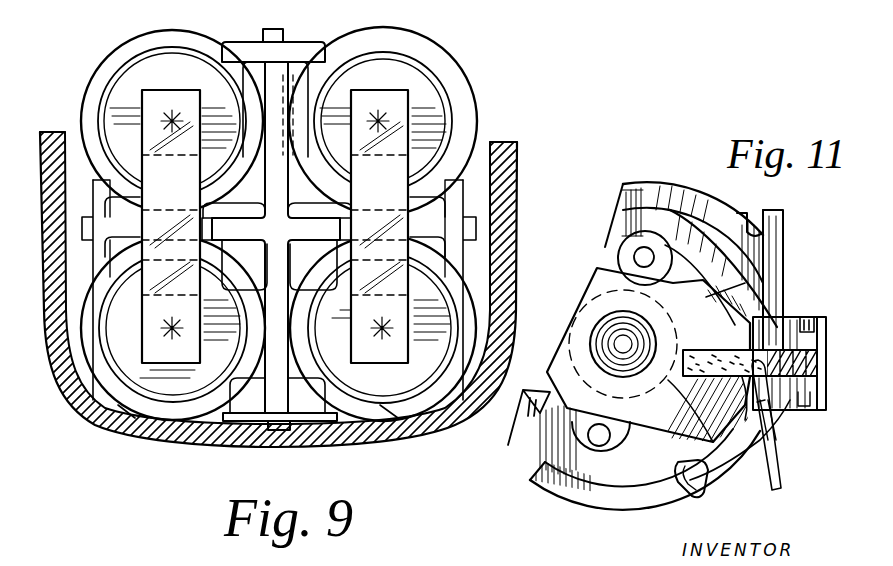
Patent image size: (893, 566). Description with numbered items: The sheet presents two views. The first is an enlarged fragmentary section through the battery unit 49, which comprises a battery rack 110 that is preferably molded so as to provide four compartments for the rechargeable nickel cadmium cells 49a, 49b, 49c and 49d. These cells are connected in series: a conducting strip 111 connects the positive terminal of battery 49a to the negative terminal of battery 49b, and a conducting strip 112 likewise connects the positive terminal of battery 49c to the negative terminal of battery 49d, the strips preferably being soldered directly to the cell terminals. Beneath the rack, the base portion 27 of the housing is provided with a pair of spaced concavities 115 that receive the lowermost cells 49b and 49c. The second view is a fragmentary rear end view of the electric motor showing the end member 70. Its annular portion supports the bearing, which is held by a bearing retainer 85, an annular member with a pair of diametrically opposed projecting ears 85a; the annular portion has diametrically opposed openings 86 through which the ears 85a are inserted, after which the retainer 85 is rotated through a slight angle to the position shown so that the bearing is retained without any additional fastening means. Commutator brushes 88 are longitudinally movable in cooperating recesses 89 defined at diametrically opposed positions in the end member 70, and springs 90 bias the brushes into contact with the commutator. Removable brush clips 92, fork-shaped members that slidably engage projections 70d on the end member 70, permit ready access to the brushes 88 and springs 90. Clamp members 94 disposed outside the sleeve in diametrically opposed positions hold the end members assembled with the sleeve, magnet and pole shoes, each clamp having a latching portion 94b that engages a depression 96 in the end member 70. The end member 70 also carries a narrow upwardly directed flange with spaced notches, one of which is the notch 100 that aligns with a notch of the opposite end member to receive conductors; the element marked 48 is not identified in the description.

In FIG. 9, the base portion 27 is at (162, 422).
In FIG. 9, the battery unit 49 is at (470, 96).
In FIG. 9, the rechargeable nickel cadmium cell 49a is at (432, 58).
In FIG. 9, the rechargeable nickel cadmium cell 49b is at (418, 403).
In FIG. 9, the rechargeable nickel cadmium cell 49c is at (118, 394).
In FIG. 9, the rechargeable nickel cadmium cell 49d is at (98, 72).
In FIG. 9, the battery rack 110 is at (267, 403).
In FIG. 9, the conducting strip 111 is at (396, 173).
In FIG. 9, the conducting strip 112 is at (170, 197).
In FIG. 9, the concavities 115 is at (382, 418).
In FIG. 11, the bearing retainer 85 is at (622, 245).
In FIG. 11, the projecting ears 85a is at (593, 497).
In FIG. 11, the end member 70 is at (692, 247).
In FIG. 11, the notch 100 is at (758, 216).
In FIG. 11, the post 48 is at (787, 243).
In FIG. 11, the openings 86 is at (532, 398).
In FIG. 11, the brush clips 92 is at (808, 320).
In FIG. 11, the projections 70d is at (814, 330).
In FIG. 11, the springs 90 is at (818, 352).
In FIG. 11, the recesses 89 is at (735, 352).
In FIG. 11, the commutator brushes 88 is at (724, 410).
In FIG. 11, the clamp members 94 is at (705, 493).
In FIG. 11, the latching portion 94b is at (772, 440).
In FIG. 11, the depression 96 is at (676, 465).